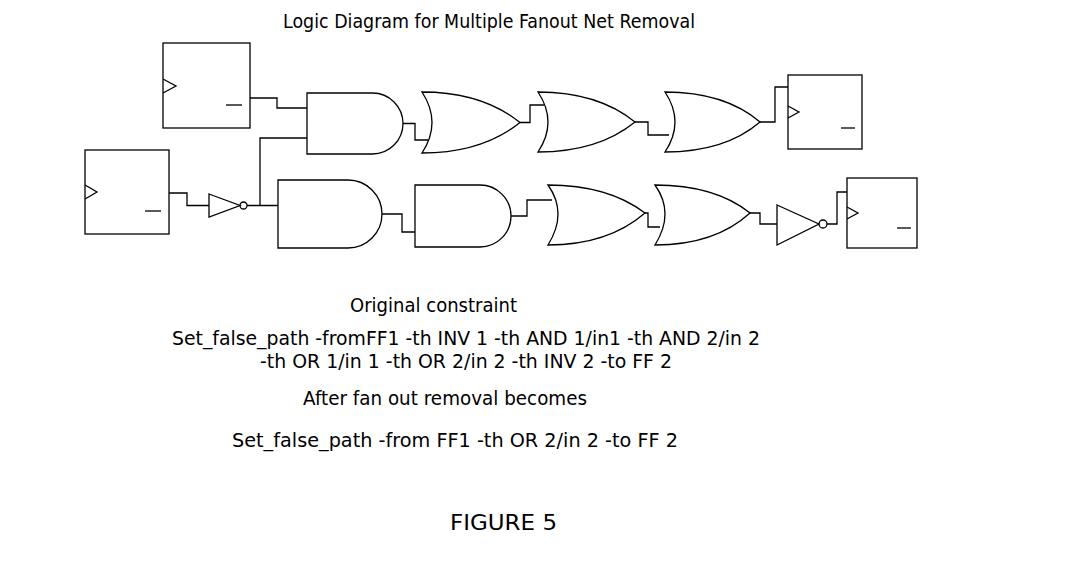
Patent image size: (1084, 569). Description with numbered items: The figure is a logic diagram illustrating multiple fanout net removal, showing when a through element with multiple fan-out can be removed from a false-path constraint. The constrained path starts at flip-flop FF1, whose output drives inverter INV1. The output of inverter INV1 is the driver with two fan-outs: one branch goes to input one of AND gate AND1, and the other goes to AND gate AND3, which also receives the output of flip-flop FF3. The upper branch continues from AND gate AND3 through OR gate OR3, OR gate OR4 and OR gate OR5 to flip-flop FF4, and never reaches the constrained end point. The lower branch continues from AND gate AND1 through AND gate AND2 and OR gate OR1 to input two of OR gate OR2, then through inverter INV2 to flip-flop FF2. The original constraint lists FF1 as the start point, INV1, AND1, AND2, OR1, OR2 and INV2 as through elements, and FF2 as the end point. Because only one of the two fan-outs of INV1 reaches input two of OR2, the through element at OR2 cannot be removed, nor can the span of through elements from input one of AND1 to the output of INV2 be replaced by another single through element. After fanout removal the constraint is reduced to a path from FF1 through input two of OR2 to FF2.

The flip-flop FF1 is at (127, 205).
The flip-flop FF2 is at (882, 222).
The flip-flop FF3 is at (206, 97).
The flip-flop FF4 is at (825, 121).
The inverter INV1 is at (228, 213).
The inverter INV2 is at (802, 231).
The AND gate AND1 is at (330, 214).
The AND gate AND2 is at (463, 216).
The AND gate AND3 is at (355, 123).
The OR gate OR1 is at (596, 215).
The OR gate OR2 is at (702, 215).
The OR gate OR3 is at (471, 122).
The OR gate OR4 is at (586, 122).
The OR gate OR5 is at (712, 122).